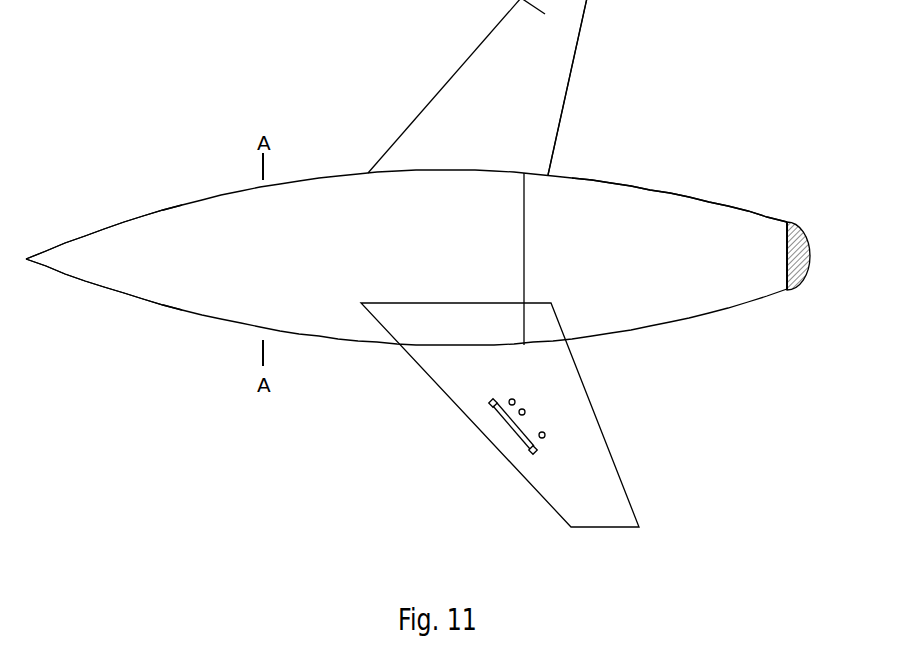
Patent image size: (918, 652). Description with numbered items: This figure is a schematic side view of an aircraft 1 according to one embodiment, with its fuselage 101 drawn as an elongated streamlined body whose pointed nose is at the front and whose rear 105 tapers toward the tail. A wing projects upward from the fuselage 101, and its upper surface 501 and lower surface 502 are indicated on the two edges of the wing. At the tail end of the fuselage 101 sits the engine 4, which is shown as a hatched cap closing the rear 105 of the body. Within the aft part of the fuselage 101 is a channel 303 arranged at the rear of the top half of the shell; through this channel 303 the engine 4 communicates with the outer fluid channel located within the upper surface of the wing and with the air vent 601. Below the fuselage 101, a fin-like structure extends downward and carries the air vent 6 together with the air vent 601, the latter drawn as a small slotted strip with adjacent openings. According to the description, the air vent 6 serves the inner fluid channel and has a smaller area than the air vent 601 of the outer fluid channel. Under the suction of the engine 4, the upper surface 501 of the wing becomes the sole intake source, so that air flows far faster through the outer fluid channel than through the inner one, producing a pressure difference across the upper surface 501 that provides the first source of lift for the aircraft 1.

The aircraft 1 is at (406, 220).
The fuselage 101 is at (104, 239).
The channel 303 is at (679, 179).
The upper surface 501 is at (477, 87).
The lower surface 502 is at (592, 87).
The rear 105 is at (609, 281).
The engine 4 is at (819, 243).
The air vent 6 is at (500, 415).
The air vent 601 is at (477, 426).